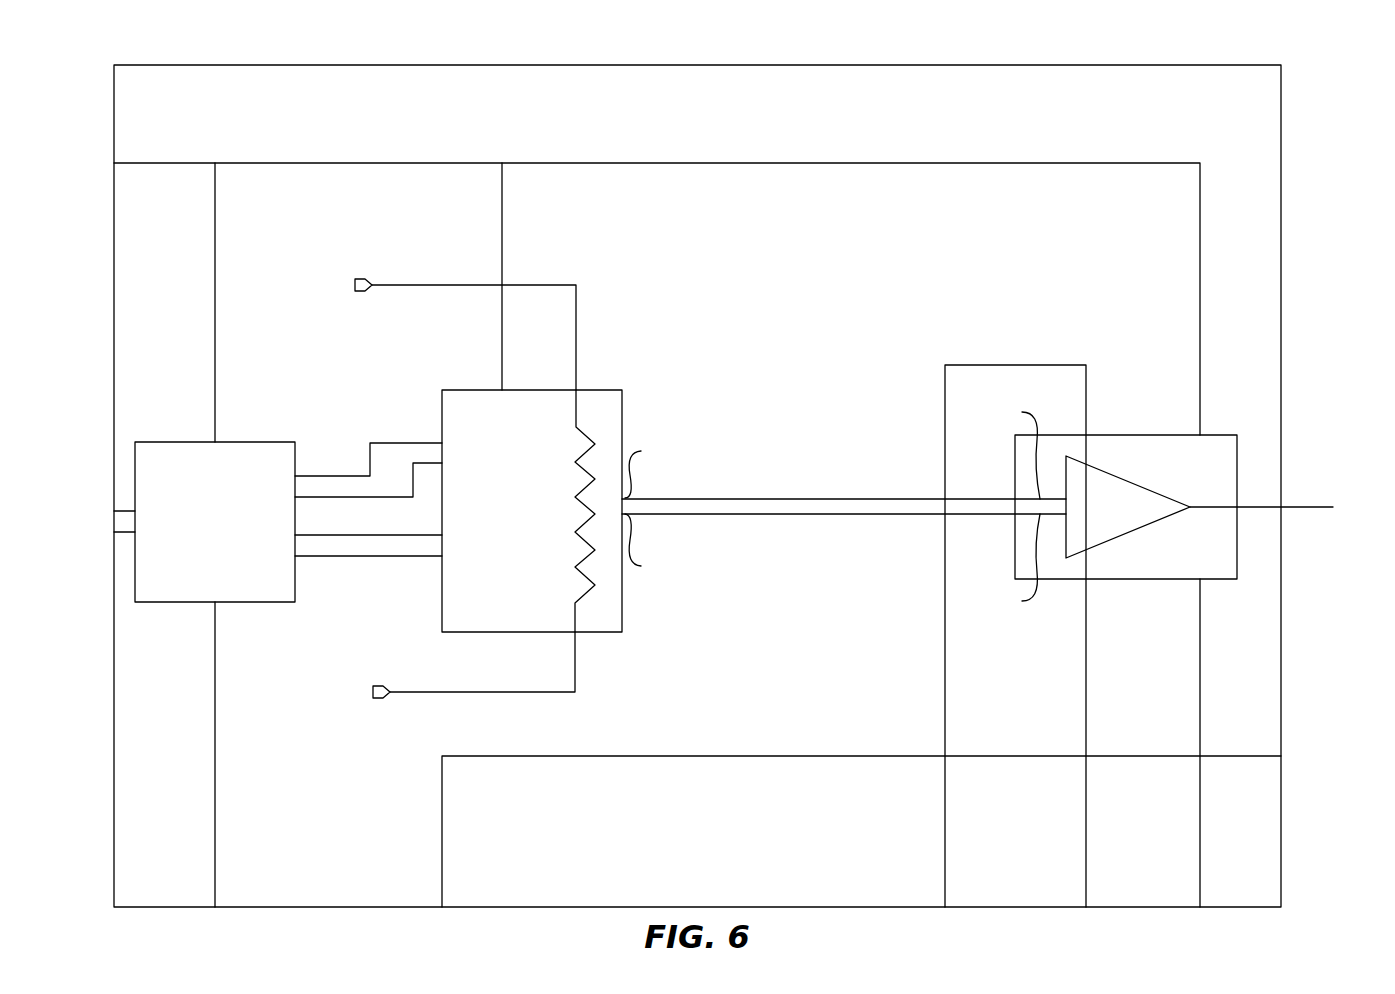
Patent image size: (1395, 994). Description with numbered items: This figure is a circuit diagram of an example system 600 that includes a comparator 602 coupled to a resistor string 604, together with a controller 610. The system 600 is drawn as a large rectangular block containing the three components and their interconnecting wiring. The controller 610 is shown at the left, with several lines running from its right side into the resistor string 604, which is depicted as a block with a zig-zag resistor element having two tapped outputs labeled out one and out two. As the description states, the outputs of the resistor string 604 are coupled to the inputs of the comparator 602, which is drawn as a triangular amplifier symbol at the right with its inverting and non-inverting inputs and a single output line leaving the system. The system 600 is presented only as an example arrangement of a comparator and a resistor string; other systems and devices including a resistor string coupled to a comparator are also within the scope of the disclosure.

The system 600 is at (754, 467).
The comparator 602 is at (1130, 533).
The resistor string 604 is at (612, 423).
The controller 610 is at (198, 550).